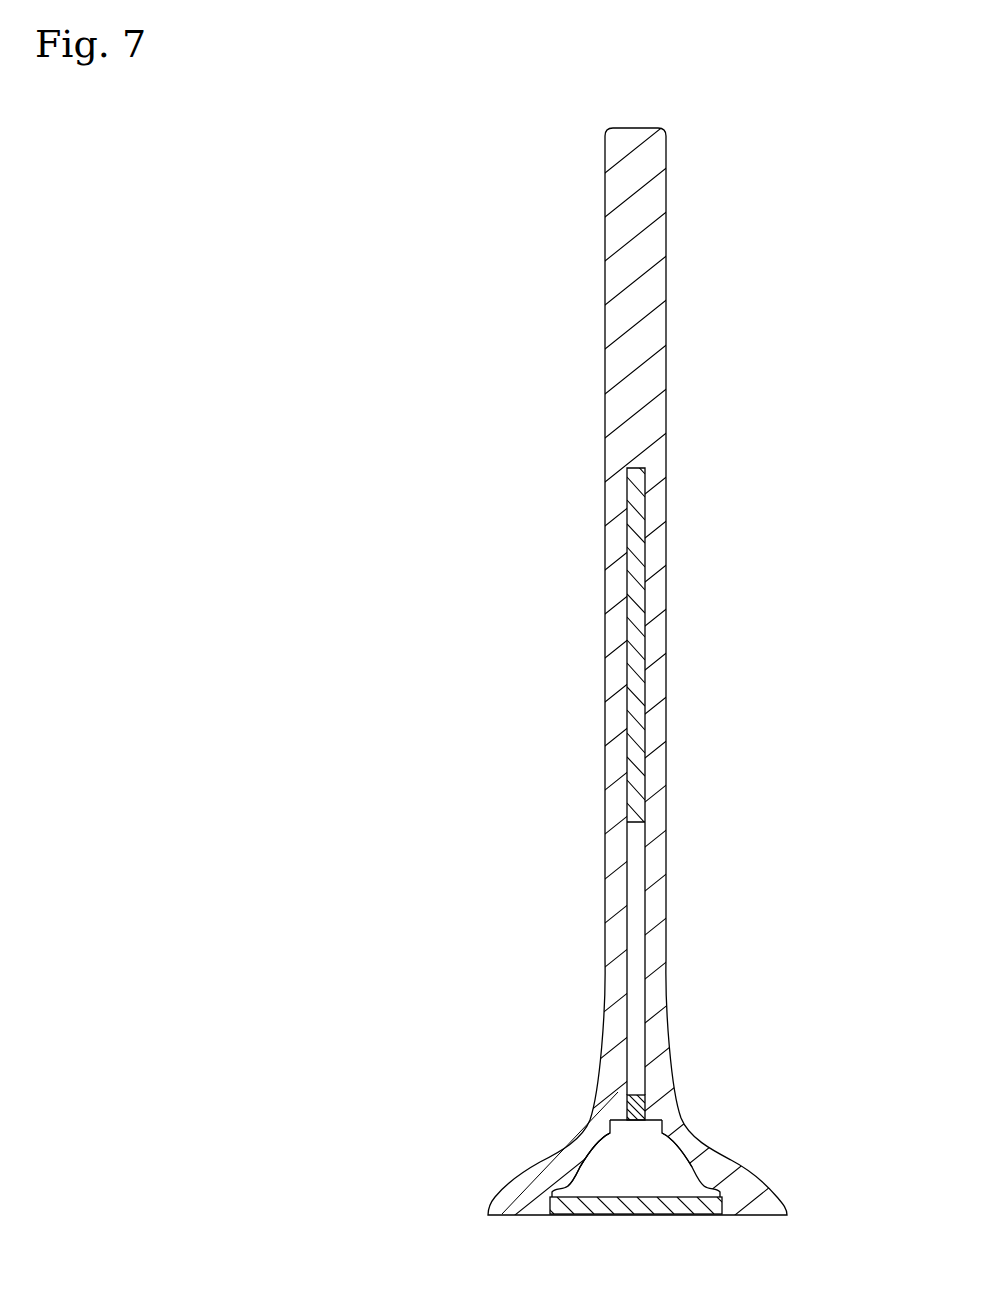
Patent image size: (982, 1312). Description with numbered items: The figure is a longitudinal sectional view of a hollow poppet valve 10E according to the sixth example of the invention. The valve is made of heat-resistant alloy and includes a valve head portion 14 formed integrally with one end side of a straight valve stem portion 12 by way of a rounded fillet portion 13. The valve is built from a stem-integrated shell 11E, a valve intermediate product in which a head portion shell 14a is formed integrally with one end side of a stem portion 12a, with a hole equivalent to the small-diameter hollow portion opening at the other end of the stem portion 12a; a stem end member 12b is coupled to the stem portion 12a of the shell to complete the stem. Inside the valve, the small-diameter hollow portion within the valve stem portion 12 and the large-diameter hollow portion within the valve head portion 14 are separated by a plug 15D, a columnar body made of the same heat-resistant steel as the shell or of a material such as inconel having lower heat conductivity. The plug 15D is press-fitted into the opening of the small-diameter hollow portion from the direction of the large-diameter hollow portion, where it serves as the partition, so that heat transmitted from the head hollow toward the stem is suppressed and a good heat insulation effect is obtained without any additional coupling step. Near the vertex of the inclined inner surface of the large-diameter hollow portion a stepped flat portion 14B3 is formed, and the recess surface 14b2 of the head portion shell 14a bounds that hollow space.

The hollow poppet valve 10E is at (308, 534).
The stem-integrated shell 11E is at (383, 950).
The valve stem portion 12 is at (551, 656).
The stem portion 12a is at (605, 992).
The stem end member 12b is at (605, 433).
The fillet portion 13 is at (595, 1135).
The valve head portion 14 is at (582, 1144).
The head portion shell 14a is at (503, 1216).
The head inner cavity surface 14b2 is at (569, 1162).
The stepped flat portion 14B3 is at (680, 1193).
The plug 15D is at (647, 1107).